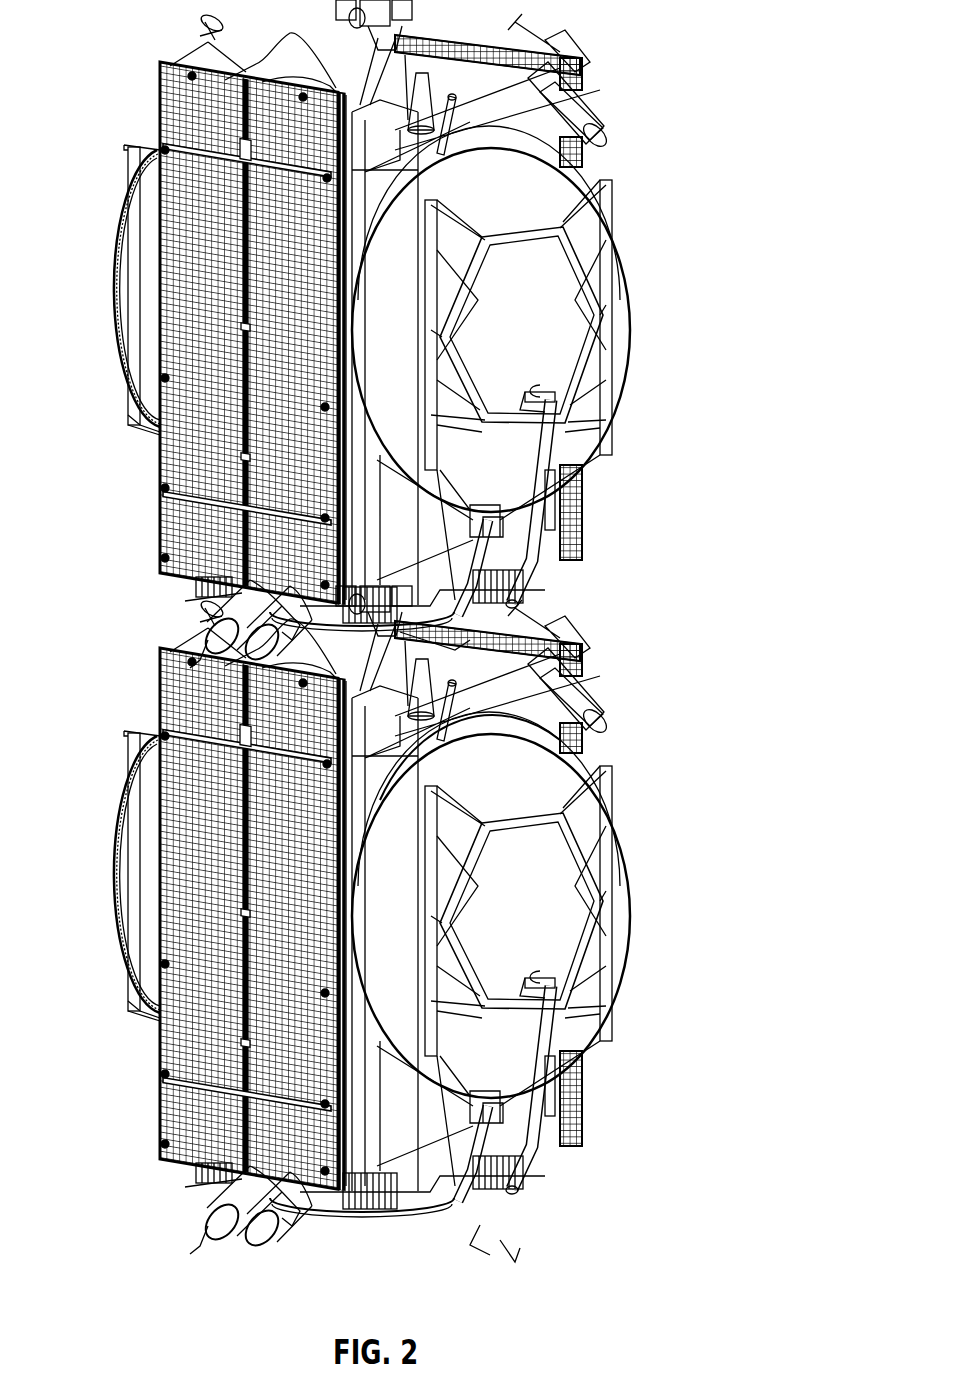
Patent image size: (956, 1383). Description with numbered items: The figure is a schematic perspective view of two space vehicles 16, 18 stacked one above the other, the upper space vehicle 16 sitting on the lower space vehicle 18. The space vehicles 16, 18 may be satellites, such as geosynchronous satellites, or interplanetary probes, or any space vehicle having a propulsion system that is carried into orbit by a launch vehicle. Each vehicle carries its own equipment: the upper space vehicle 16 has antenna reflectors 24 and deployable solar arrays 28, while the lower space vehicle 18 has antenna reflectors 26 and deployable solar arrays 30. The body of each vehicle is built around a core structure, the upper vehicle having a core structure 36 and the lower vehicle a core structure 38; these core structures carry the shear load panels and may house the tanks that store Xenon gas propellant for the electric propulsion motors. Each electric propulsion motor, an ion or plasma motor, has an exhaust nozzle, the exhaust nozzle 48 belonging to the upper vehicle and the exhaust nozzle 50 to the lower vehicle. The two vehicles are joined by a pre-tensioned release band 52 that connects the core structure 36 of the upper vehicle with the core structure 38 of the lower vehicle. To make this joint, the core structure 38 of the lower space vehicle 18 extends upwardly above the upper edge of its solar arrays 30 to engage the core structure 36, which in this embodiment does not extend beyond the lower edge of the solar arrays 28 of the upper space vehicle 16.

The space vehicle 16 is at (636, 174).
The space vehicle 18 is at (640, 726).
The antenna reflector 24 is at (108, 268).
The antenna reflector 26 is at (108, 858).
The deployable solar array 28 is at (186, 105).
The deployable solar array 30 is at (166, 1046).
The core structure 36 is at (536, 614).
The core structure 38 is at (447, 760).
The exhaust nozzle 48 is at (204, 614).
The exhaust nozzle 50 is at (204, 1198).
The pre-tensioned release band 52 is at (422, 636).